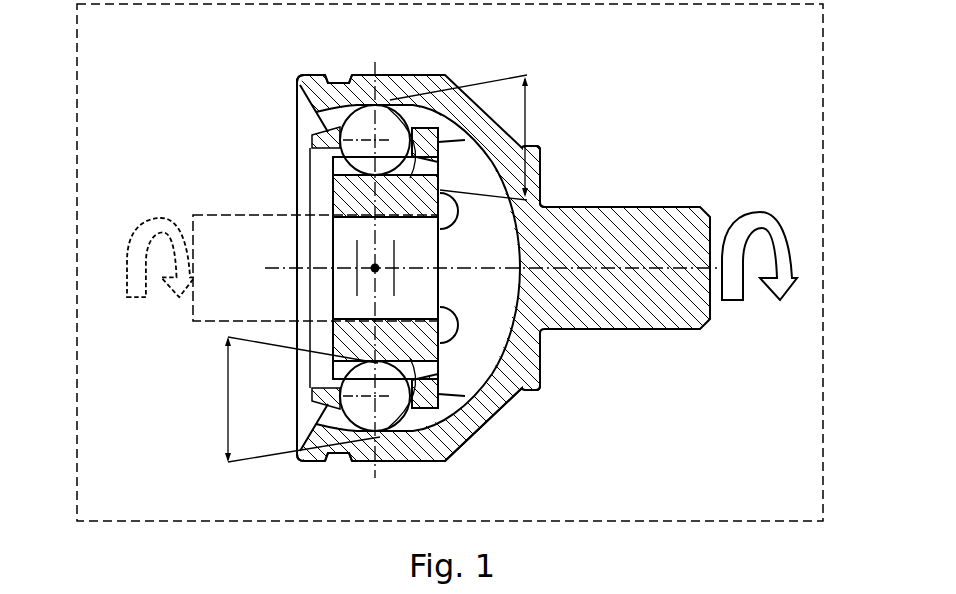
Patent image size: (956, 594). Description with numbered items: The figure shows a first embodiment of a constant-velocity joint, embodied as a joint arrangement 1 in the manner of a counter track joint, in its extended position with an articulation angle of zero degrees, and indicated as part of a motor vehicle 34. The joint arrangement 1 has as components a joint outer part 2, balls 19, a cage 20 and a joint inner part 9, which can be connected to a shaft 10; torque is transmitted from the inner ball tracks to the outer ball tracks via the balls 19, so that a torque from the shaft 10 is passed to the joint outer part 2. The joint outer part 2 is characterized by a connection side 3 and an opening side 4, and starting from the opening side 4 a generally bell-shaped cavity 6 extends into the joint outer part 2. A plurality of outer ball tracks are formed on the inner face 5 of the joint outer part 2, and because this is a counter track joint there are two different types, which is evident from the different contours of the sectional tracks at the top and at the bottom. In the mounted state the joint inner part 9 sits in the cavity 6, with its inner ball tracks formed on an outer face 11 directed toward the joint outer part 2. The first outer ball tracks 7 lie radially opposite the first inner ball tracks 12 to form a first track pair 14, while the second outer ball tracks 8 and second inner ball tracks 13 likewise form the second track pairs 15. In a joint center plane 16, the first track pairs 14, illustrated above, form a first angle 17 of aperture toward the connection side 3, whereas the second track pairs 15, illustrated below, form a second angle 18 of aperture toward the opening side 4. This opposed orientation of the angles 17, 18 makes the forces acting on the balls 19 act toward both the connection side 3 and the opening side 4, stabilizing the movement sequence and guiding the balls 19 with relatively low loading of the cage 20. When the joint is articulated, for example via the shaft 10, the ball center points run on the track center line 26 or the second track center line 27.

The joint arrangement 1 is at (195, 93).
The joint outer part 2 is at (545, 388).
The connection side 3 is at (548, 331).
The opening side 4 is at (296, 118).
The inner face 5 is at (520, 247).
The cavity 6 is at (525, 398).
The first outer ball tracks 7 is at (300, 78).
The second outer ball tracks 8 is at (318, 462).
The joint inner part 9 is at (486, 421).
The shaft 10 is at (195, 207).
The outer face 11 is at (300, 180).
The first inner ball tracks 12 is at (397, 140).
The second inner ball tracks 13 is at (345, 356).
The first track pair 14 is at (607, 126).
The second track pair 15 is at (622, 420).
The joint center plane 16 is at (425, 240).
The first angle of aperture 17 is at (530, 120).
The second angle of aperture 18 is at (221, 400).
The balls 19 is at (337, 80).
The cage 20 is at (420, 462).
The track center line 26 is at (380, 130).
The second track center line 27 is at (348, 462).
The motor vehicle 34 is at (700, 520).